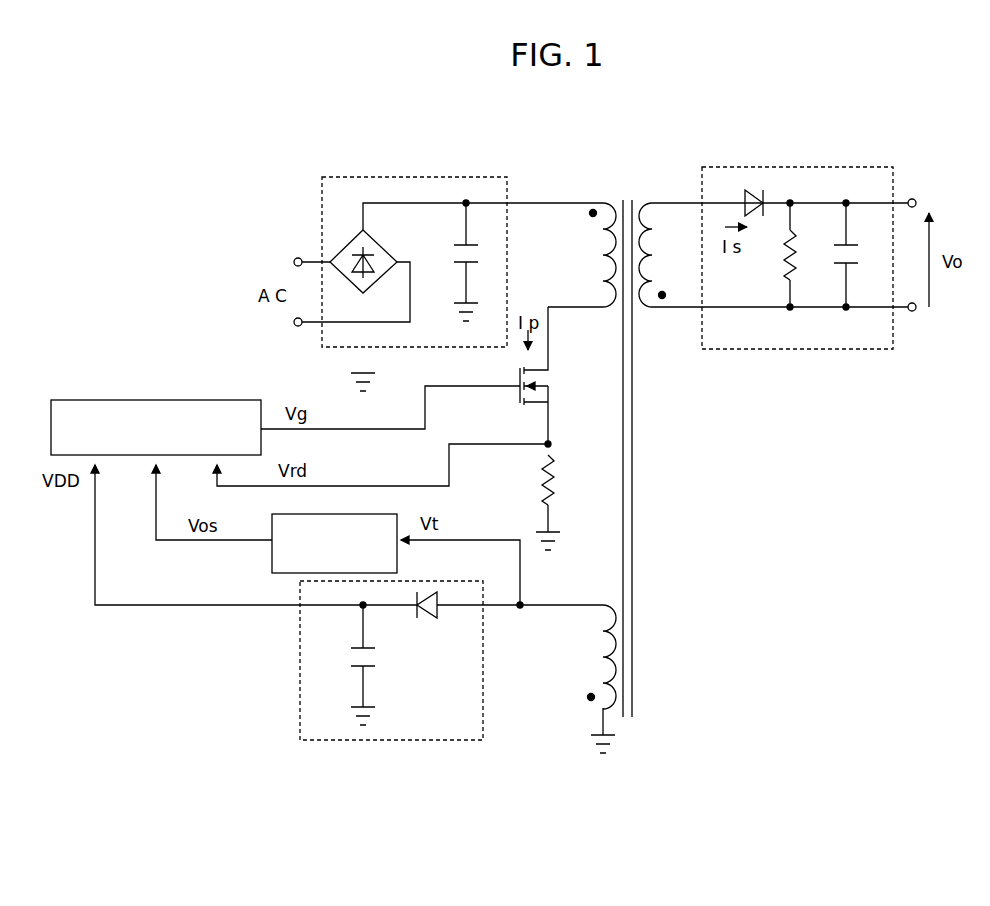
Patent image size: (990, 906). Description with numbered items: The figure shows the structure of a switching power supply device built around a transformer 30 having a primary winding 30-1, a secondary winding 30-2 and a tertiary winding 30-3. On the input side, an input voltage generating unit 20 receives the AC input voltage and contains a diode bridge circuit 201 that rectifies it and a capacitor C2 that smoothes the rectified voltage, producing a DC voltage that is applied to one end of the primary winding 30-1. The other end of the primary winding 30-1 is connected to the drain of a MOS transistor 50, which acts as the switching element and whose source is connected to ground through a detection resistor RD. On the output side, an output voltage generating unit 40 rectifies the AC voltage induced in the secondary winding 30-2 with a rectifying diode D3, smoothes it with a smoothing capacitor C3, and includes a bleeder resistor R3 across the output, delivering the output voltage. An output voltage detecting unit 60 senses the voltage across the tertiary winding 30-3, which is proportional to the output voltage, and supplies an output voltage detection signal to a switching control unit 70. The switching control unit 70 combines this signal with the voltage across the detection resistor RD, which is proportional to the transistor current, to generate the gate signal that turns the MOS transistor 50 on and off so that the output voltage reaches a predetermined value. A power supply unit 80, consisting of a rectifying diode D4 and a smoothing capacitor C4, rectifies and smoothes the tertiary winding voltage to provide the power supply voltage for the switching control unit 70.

The input voltage generating unit 20 is at (415, 177).
The diode bridge circuit 201 is at (382, 244).
The capacitor C2 is at (480, 255).
The transformer 30 is at (610, 436).
The primary winding 30-1 is at (600, 258).
The secondary winding 30-2 is at (645, 310).
The tertiary winding 30-3 is at (599, 661).
The output voltage generating unit 40 is at (805, 167).
The rectifying diode D3 is at (740, 194).
The bleeder resistor R3 is at (804, 255).
The smoothing capacitor C3 is at (860, 257).
The MOS transistor 50 is at (518, 403).
The detection resistor RD is at (530, 480).
The output voltage detecting unit 60 is at (272, 563).
The switching control unit 70 is at (152, 400).
The power supply unit 80 is at (390, 740).
The rectifying diode D4 is at (425, 619).
The smoothing capacitor C4 is at (378, 658).